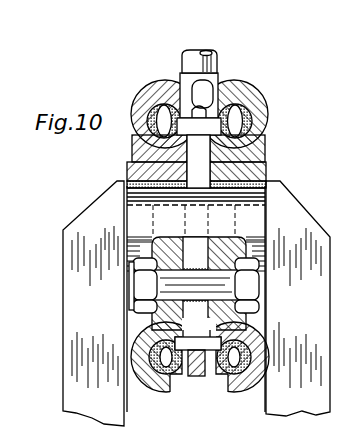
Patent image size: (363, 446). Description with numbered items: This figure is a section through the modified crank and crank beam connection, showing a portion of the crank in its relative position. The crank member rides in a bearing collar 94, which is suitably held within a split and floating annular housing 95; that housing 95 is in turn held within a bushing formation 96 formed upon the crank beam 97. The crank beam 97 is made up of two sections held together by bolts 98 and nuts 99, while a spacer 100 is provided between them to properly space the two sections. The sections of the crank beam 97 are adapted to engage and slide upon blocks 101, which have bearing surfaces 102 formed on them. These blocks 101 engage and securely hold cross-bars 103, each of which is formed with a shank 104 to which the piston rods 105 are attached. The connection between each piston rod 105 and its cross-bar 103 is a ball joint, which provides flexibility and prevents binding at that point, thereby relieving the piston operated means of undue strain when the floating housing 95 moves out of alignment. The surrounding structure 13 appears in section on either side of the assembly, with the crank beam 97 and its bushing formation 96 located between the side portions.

The housing 13 is at (314, 220).
The bearing collar 94 is at (130, 193).
The split and floating annular housing 95 is at (127, 168).
The bushing formation 96 is at (130, 158).
The crank beam 97 is at (150, 322).
The bolts 98 is at (250, 288).
The nuts 99 is at (127, 293).
The spacer 100 is at (192, 263).
The blocks 101 is at (233, 100).
The bearing surfaces 102 is at (253, 98).
The cross-bars 103 is at (192, 128).
The shank 104 is at (210, 87).
The piston rods 105 is at (192, 52).